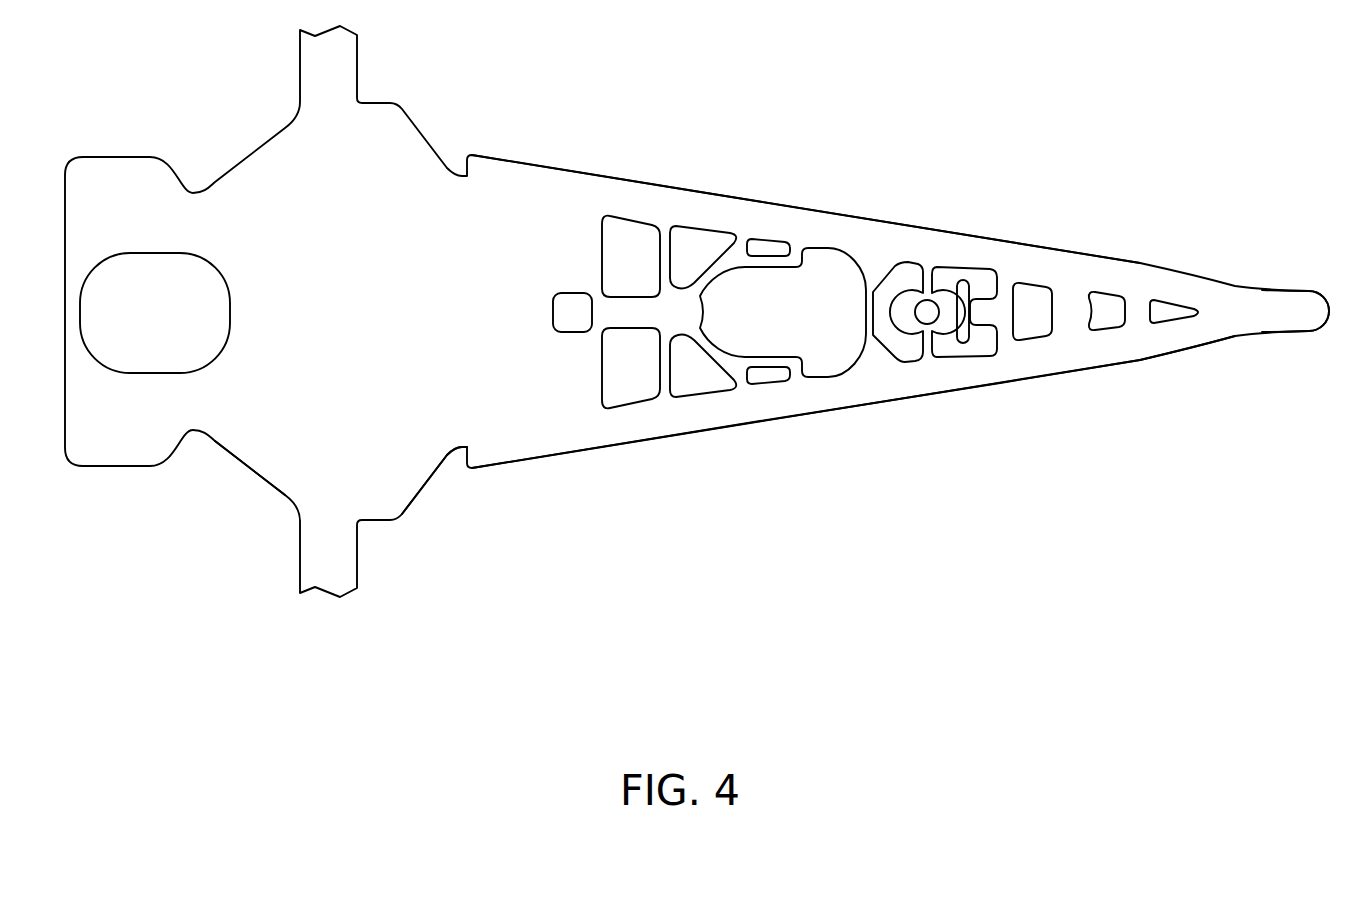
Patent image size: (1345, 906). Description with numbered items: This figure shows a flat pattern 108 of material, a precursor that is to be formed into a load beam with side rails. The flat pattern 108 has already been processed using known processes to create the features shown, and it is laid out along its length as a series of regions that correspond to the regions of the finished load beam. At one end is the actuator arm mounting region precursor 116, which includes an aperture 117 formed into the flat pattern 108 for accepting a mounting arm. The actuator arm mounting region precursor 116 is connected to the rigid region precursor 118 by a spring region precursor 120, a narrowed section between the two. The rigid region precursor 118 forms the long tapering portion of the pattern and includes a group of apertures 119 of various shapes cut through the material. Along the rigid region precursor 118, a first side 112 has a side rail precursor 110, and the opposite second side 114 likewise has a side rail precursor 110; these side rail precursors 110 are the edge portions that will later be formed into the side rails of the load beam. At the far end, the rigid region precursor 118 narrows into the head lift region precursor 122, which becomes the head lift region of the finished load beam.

The flat pattern 108 is at (628, 508).
The side rail precursor 110 is at (590, 202).
The first side 112 is at (935, 228).
The second side 114 is at (963, 390).
The actuator arm mounting region precursor 116 is at (240, 458).
The aperture 117 is at (165, 288).
The rigid region precursor 118 is at (1065, 377).
The apertures 119 is at (703, 243).
The spring region precursor 120 is at (445, 460).
The head lift region precursor 122 is at (1273, 337).